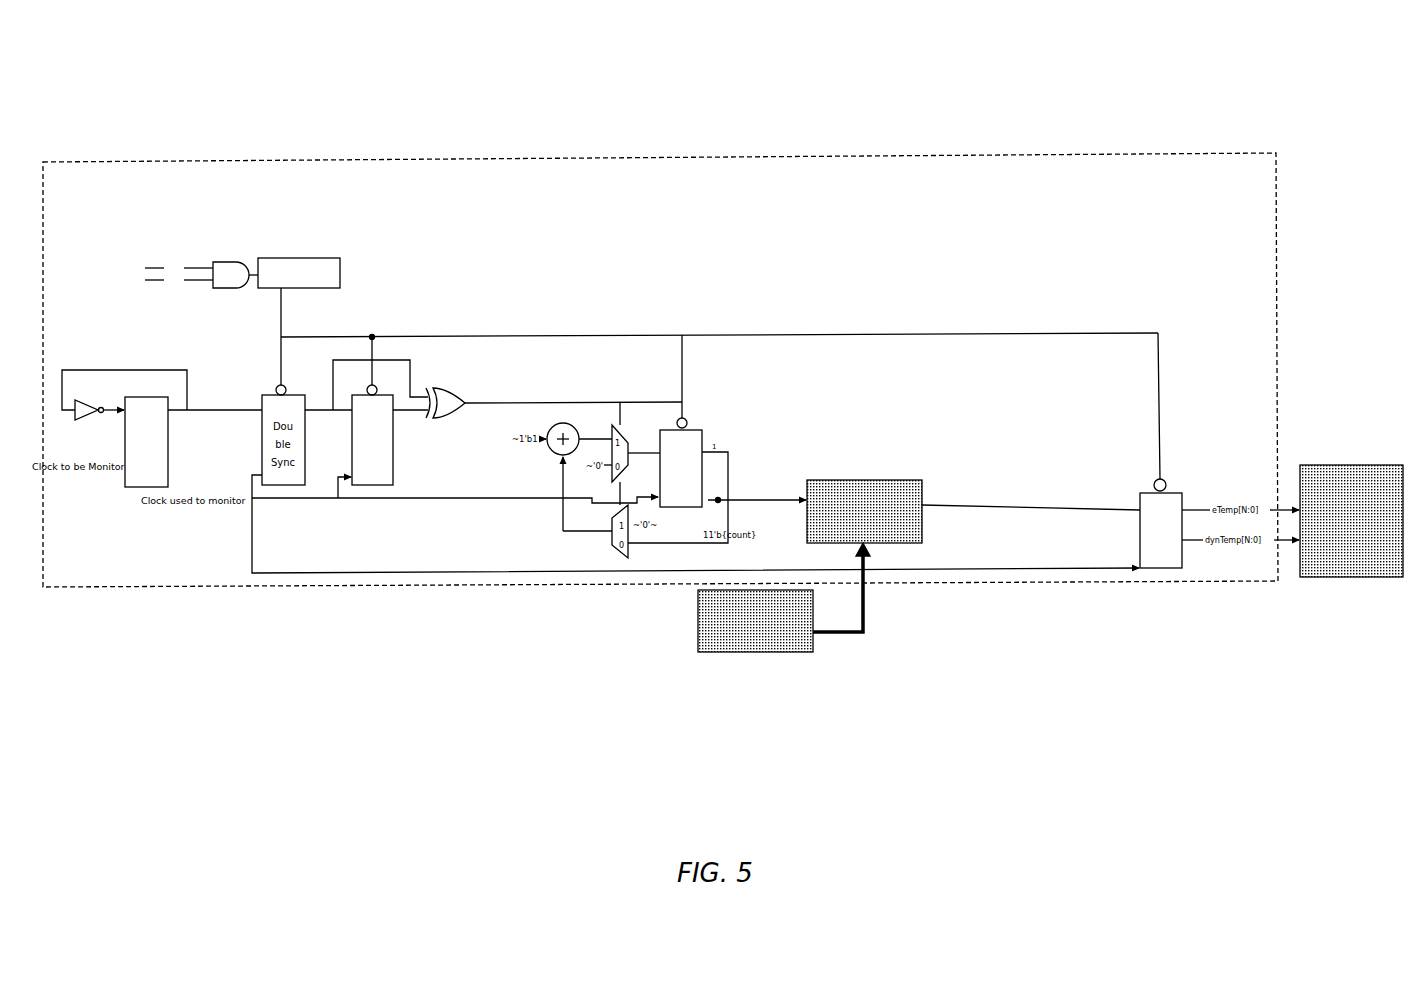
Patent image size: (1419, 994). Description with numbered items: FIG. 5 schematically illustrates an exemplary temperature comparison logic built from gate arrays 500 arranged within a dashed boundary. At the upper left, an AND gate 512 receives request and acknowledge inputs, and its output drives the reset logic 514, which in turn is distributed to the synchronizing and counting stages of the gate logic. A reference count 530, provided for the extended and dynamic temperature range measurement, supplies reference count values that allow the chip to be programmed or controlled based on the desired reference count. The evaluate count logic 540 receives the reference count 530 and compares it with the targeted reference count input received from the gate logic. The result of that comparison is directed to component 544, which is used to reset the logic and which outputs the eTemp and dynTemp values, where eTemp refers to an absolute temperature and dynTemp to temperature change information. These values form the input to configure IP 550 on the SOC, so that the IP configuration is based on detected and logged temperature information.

The gate arrays 500 is at (1196, 150).
The AND gate 512 is at (221, 260).
The reset logic 514 is at (340, 273).
The reference count 530 is at (727, 653).
The evaluate count logic 540 is at (893, 543).
The component 544 is at (1183, 580).
The configure IP 550 is at (1341, 465).